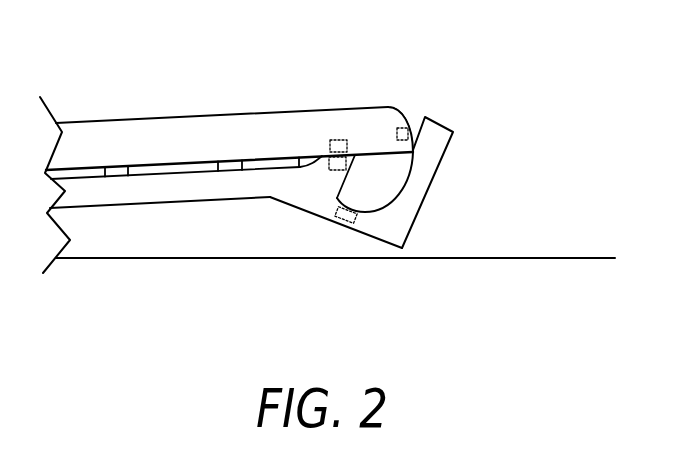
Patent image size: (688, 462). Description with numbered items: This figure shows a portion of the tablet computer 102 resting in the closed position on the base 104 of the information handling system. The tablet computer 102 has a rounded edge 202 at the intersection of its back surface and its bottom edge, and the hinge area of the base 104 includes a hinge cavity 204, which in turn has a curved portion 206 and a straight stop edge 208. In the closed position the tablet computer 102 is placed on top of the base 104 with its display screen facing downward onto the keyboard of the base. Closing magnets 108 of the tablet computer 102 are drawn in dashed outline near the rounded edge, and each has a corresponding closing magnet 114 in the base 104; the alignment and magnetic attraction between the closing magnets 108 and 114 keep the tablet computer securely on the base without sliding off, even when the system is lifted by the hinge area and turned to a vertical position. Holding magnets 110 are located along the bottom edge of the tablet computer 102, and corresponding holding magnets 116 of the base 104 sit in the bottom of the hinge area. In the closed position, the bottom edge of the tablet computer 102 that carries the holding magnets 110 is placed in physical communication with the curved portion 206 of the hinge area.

The tablet computer 102 is at (235, 150).
The base 104 is at (169, 202).
The closing magnets 108 is at (330, 139).
The holding magnets 110 is at (425, 116).
The closing magnets 114 is at (328, 170).
The holding magnets 116 is at (347, 222).
The rounded edge 202 is at (397, 112).
The hinge cavity 204 is at (378, 200).
The curved portion 206 is at (408, 185).
The straight stop edge 208 is at (337, 198).